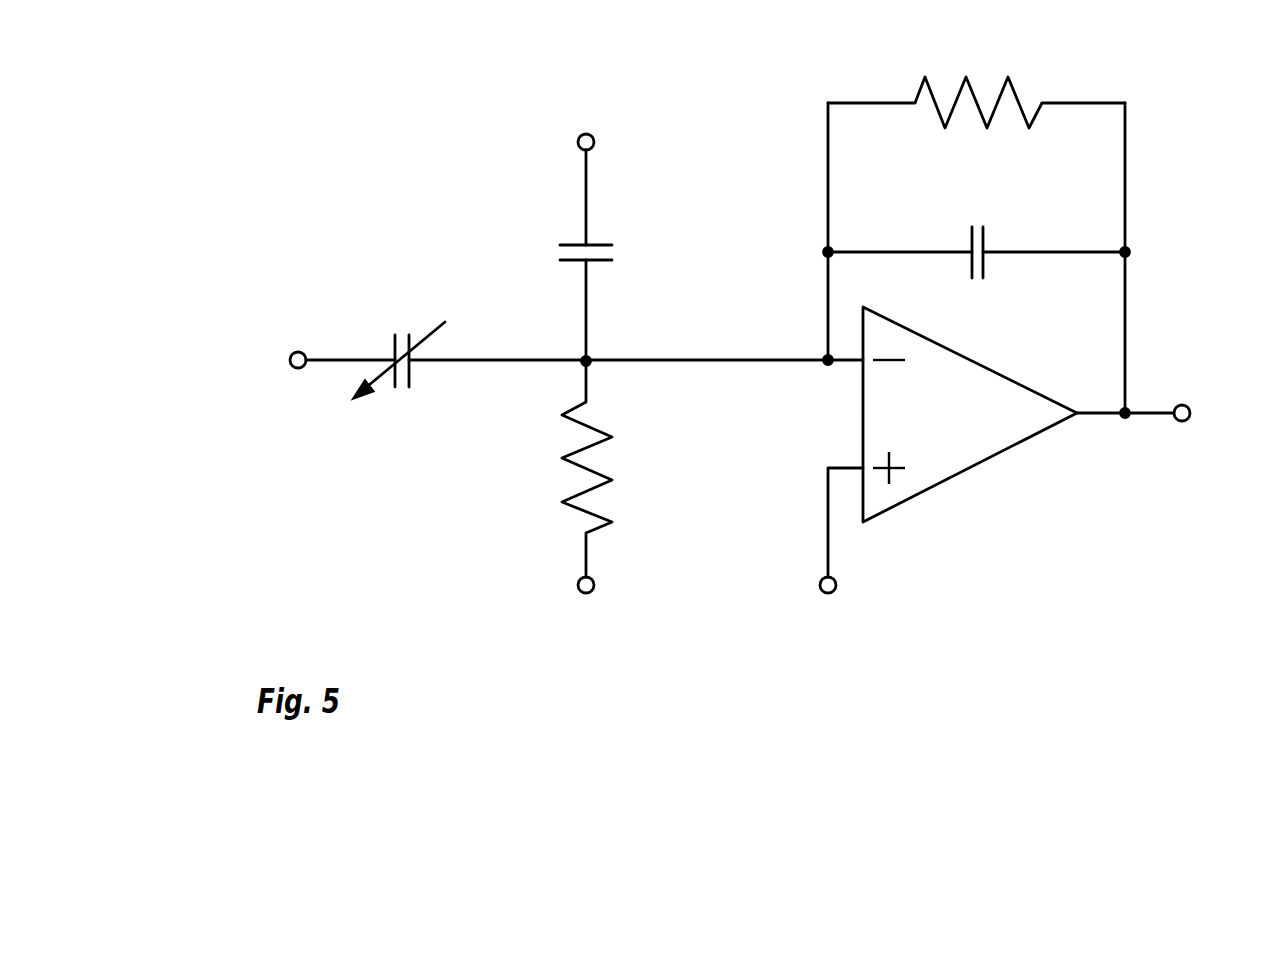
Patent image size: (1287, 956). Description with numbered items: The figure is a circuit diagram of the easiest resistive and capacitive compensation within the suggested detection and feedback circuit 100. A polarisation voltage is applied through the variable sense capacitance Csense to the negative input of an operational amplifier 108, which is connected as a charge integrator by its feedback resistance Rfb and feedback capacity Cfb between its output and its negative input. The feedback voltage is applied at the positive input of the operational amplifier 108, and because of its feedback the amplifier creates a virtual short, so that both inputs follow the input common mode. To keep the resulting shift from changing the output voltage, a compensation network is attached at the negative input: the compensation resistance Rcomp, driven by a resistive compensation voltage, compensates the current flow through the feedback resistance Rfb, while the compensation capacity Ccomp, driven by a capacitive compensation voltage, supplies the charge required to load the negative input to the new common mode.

The circuit 100 is at (743, 375).
The operational amplifier 108 is at (982, 468).
The sense capacitance Csense is at (394, 324).
The compensation capacity Ccomp is at (651, 256).
The compensation resistance Rcomp is at (654, 467).
The feedback resistance Rfb is at (978, 69).
The feedback capacity Cfb is at (977, 218).